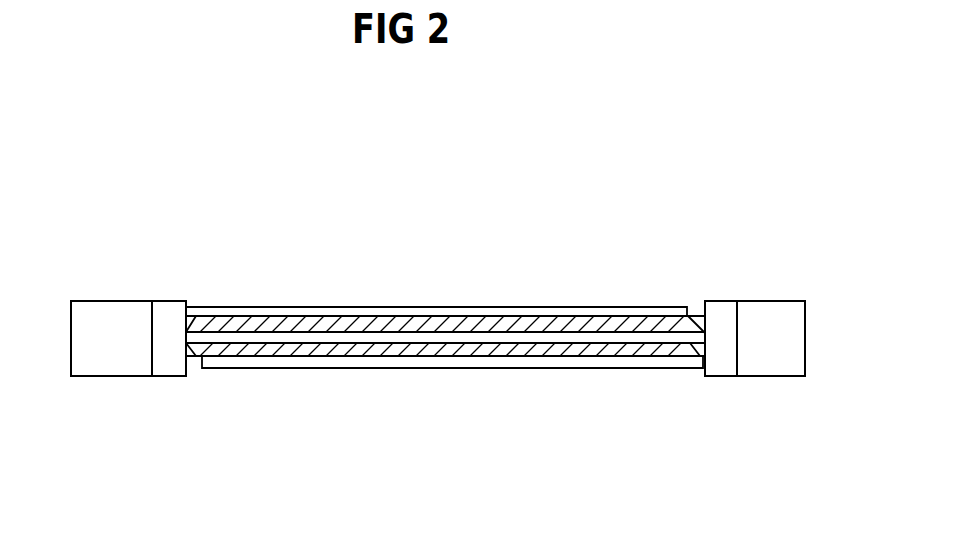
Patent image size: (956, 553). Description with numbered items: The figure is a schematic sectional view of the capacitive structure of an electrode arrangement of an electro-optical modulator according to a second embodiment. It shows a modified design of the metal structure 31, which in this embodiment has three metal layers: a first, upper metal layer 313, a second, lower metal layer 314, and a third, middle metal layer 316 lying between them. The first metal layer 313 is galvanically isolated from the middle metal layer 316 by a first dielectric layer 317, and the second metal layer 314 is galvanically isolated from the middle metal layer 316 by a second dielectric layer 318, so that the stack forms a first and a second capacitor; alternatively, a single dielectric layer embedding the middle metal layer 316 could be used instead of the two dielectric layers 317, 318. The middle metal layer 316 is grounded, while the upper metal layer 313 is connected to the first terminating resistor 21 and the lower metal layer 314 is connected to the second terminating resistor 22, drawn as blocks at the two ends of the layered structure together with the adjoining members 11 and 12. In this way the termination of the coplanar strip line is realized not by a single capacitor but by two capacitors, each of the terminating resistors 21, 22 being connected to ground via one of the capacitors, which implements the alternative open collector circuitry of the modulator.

The first end member 11 is at (116, 338).
The second end member 12 is at (768, 348).
The first terminating resistor 21 is at (165, 310).
The second terminating resistor 22 is at (718, 315).
The metal structure 31 is at (443, 316).
The first metal layer 313 is at (348, 307).
The second metal layer 314 is at (413, 362).
The third metal layer 316 is at (475, 338).
The first dielectric layer 317 is at (698, 332).
The second dielectric layer 318 is at (192, 347).